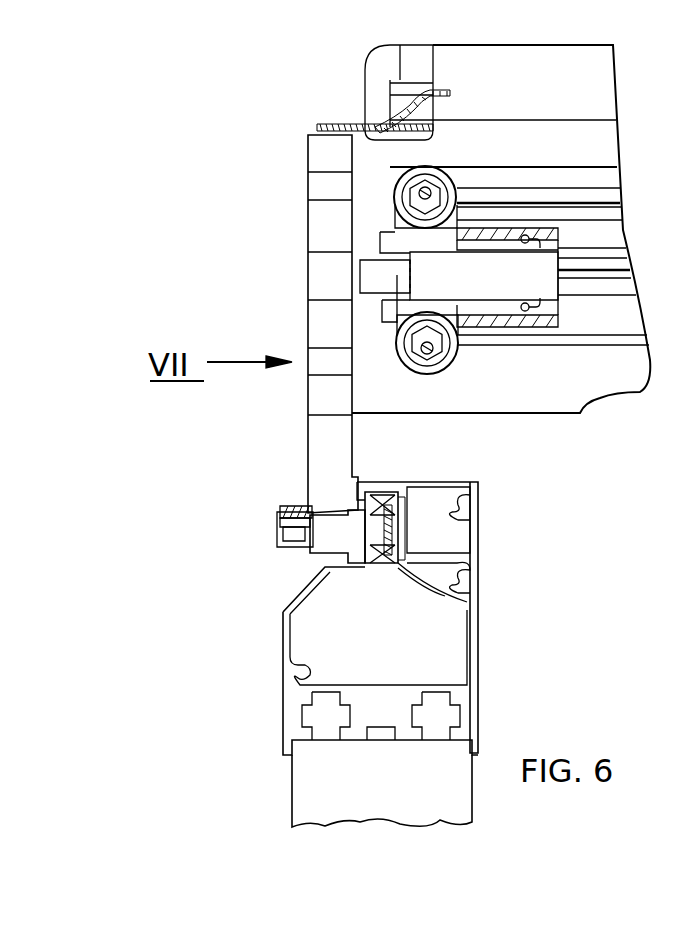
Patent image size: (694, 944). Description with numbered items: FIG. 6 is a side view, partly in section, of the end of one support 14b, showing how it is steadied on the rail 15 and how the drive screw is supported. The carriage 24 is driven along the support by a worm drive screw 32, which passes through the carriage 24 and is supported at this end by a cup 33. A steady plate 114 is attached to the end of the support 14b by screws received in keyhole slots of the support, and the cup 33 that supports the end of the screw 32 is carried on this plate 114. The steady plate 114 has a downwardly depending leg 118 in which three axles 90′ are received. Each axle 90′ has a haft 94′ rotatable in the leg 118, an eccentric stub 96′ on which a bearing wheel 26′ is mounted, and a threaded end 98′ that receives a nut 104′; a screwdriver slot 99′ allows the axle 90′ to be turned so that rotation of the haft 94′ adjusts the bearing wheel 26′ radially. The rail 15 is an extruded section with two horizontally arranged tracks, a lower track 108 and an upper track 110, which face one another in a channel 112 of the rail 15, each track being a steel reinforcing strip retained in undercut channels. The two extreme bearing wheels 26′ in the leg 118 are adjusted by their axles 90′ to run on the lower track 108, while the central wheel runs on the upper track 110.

The support 14b is at (535, 140).
The carriage 24 is at (578, 215).
The worm drive screw 32 is at (372, 268).
The cup 33 is at (363, 307).
The steady plate 114 is at (307, 228).
The downwardly depending leg 118 is at (332, 442).
The haft 94′ is at (318, 556).
The screwdriver slot 99′ is at (280, 528).
The nut 104′ is at (288, 517).
The threaded end 98′ is at (293, 512).
The axle 90′ is at (253, 565).
The upper track 110 is at (380, 500).
The channel 112 is at (397, 502).
The eccentric stub 96′ is at (397, 527).
The rail 15 is at (482, 563).
The lower track 108 is at (467, 602).
The bearing wheel 26′ is at (353, 567).